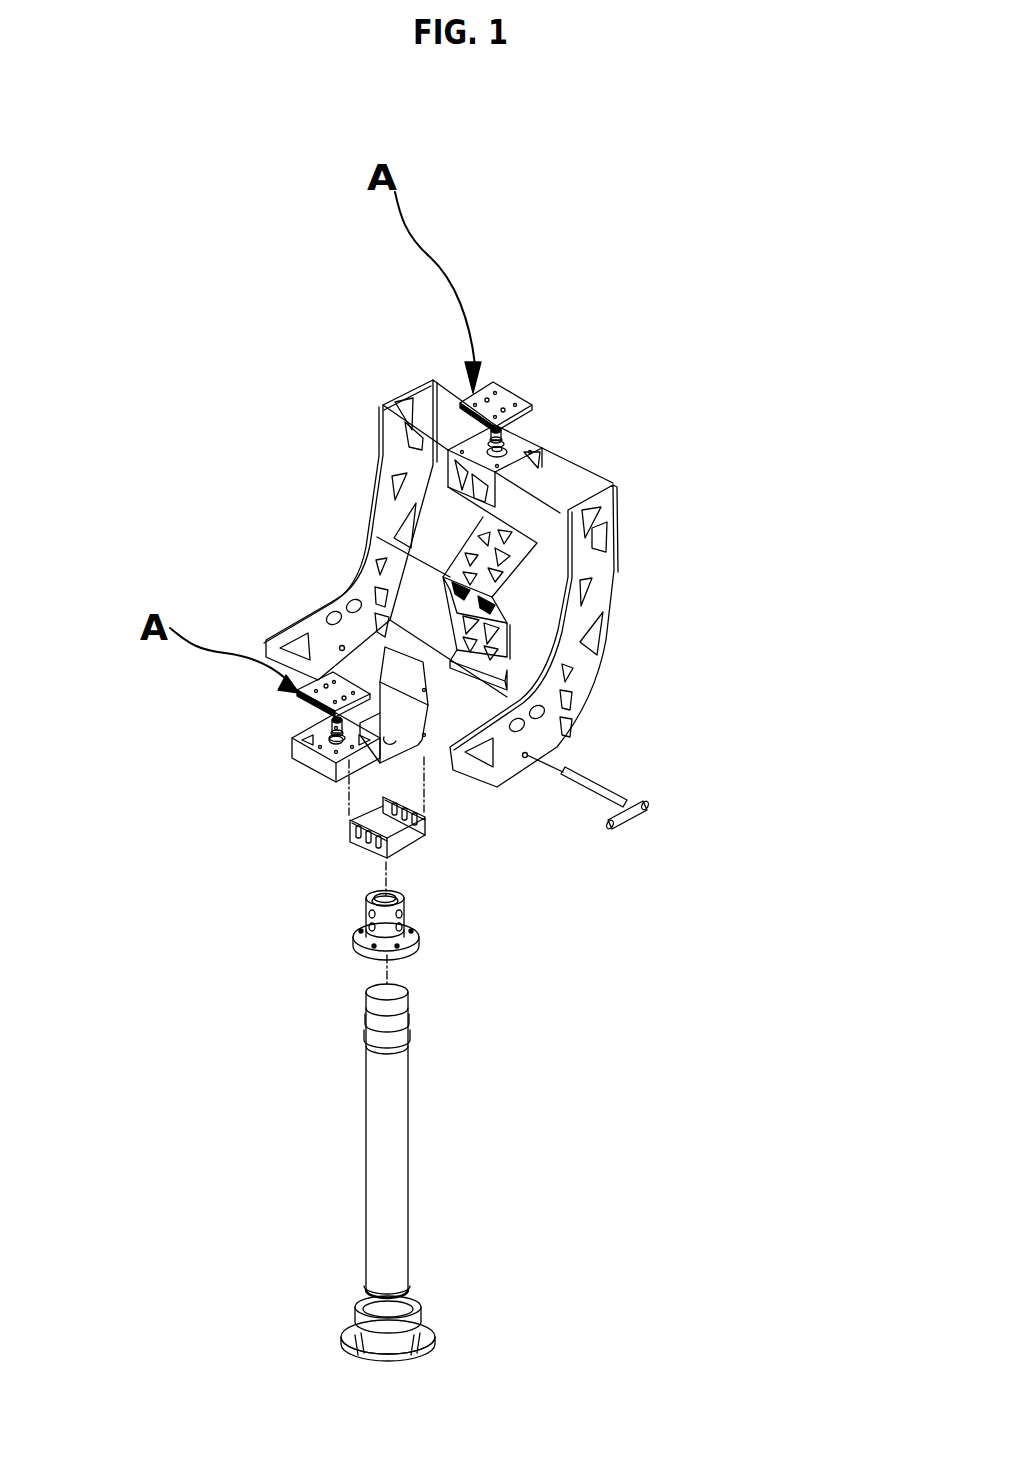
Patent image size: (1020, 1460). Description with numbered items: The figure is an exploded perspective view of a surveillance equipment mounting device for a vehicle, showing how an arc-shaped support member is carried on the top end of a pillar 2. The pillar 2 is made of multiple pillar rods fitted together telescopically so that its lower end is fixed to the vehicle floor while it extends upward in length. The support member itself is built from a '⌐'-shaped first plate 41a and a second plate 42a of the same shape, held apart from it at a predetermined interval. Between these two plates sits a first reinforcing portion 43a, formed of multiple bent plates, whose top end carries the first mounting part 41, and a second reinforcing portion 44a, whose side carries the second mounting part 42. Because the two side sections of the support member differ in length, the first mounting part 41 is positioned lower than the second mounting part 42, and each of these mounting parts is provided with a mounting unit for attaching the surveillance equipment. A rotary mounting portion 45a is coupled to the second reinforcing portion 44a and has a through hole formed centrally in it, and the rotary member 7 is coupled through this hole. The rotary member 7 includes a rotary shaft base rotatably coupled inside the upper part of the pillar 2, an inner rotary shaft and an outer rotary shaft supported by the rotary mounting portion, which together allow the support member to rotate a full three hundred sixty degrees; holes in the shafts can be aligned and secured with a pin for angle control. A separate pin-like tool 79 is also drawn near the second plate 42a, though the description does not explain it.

The pillar 2 is at (400, 1157).
The rotary member 7 is at (417, 930).
The first mounting part 41 is at (297, 740).
The first plate 41a is at (397, 393).
The second mounting part 42 is at (512, 397).
The second plate 42a is at (610, 480).
The first reinforcing portion 43a is at (457, 477).
The second reinforcing portion 44a is at (310, 770).
The rotary mounting portion 45a is at (352, 860).
The T-handle tool 79 is at (605, 788).